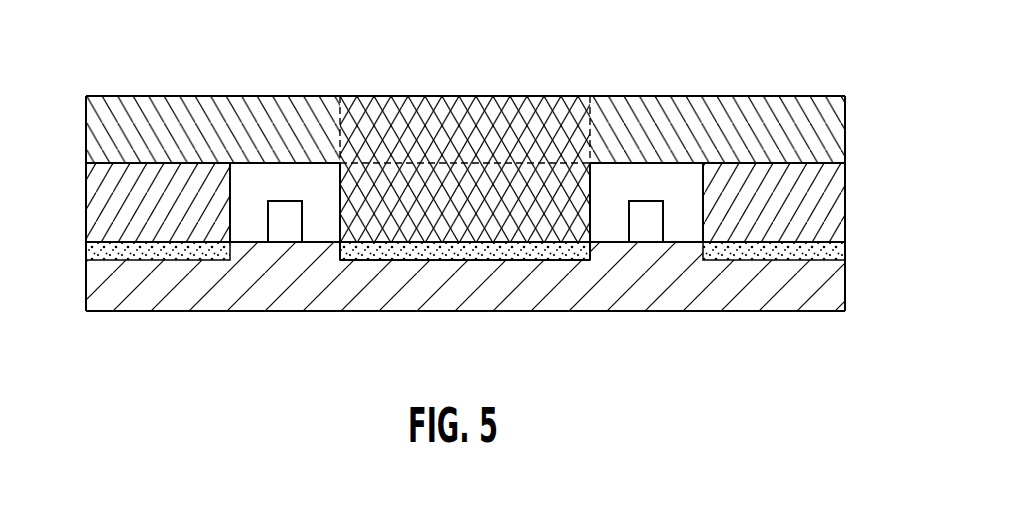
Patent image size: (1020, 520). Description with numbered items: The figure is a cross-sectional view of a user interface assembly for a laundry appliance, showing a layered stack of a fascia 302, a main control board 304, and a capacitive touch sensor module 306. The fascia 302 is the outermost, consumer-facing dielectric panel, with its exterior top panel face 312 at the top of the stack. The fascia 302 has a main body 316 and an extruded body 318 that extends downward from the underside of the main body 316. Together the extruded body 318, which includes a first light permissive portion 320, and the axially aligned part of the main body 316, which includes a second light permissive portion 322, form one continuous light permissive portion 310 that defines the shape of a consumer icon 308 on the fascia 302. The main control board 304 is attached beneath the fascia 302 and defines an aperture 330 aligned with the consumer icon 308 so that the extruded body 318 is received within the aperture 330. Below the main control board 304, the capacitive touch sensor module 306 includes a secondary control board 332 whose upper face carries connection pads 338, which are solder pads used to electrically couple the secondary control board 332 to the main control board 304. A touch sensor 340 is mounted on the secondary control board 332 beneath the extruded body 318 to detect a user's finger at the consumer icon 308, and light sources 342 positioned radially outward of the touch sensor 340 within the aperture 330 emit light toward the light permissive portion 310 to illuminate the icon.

The fascia 302 is at (107, 137).
The main control board 304 is at (107, 192).
The capacitive touch sensor module 306 is at (107, 280).
The consumer icon 308 is at (388, 96).
The light permissive portion 310 is at (534, 118).
The top panel face 312 is at (200, 90).
The main body 316 is at (688, 100).
The extruded body 318 is at (462, 180).
The first light permissive portion 320 is at (575, 193).
The second light permissive portion 322 is at (357, 129).
The aperture 330 is at (602, 230).
The secondary control board 332 is at (450, 297).
The connection pad 338 is at (96, 252).
The touch sensor 340 is at (370, 250).
The light source 342 is at (268, 222).